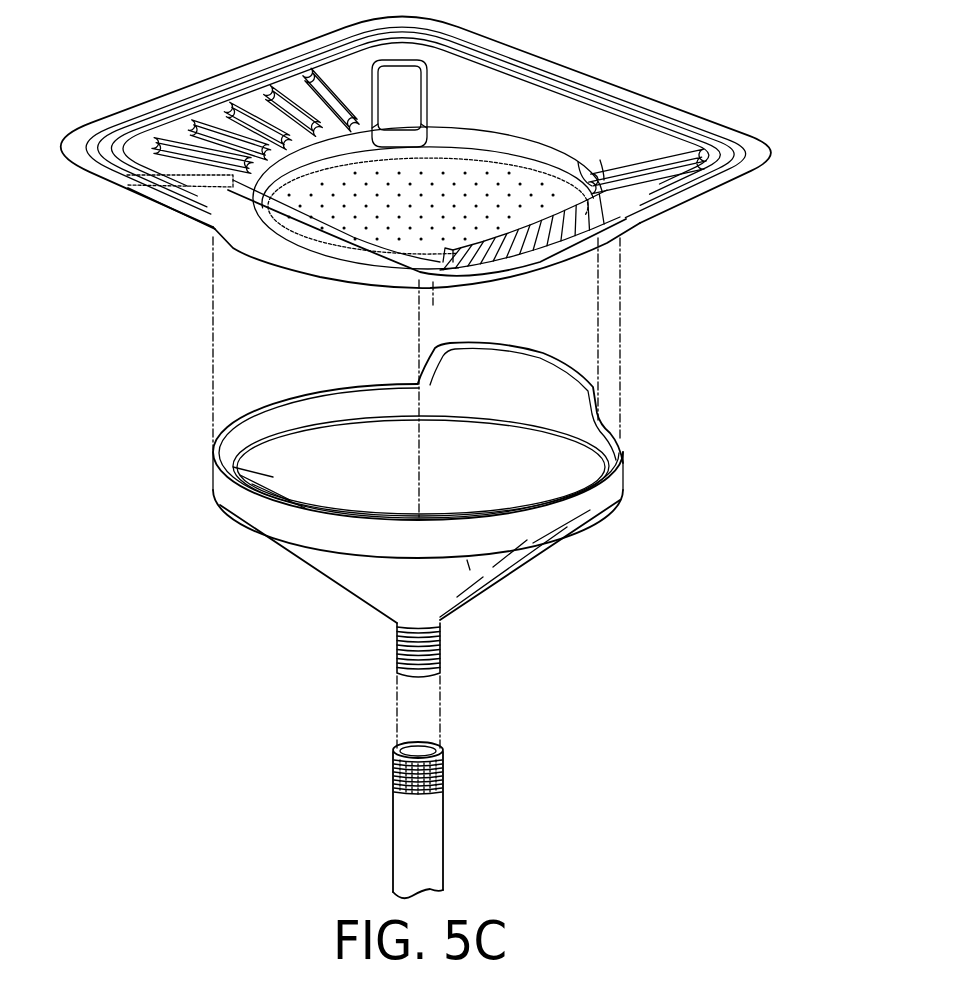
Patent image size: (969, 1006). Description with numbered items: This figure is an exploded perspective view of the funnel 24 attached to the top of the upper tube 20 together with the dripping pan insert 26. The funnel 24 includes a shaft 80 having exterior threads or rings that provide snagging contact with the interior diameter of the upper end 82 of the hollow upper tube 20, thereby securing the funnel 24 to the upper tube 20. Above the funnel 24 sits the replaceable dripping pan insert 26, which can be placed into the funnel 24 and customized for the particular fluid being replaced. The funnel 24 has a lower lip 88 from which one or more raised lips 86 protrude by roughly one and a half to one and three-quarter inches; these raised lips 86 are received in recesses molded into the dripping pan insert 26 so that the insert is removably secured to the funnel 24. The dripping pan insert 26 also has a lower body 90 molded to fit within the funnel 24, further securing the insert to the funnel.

The dripping pan insert 26 is at (553, 64).
The lower body 90 is at (257, 248).
The lower lip 88 is at (293, 397).
The raised lips 86 is at (520, 347).
The funnel 24 is at (343, 577).
The shaft 80 is at (397, 647).
The upper end 82 is at (435, 745).
The upper tube 20 is at (433, 845).